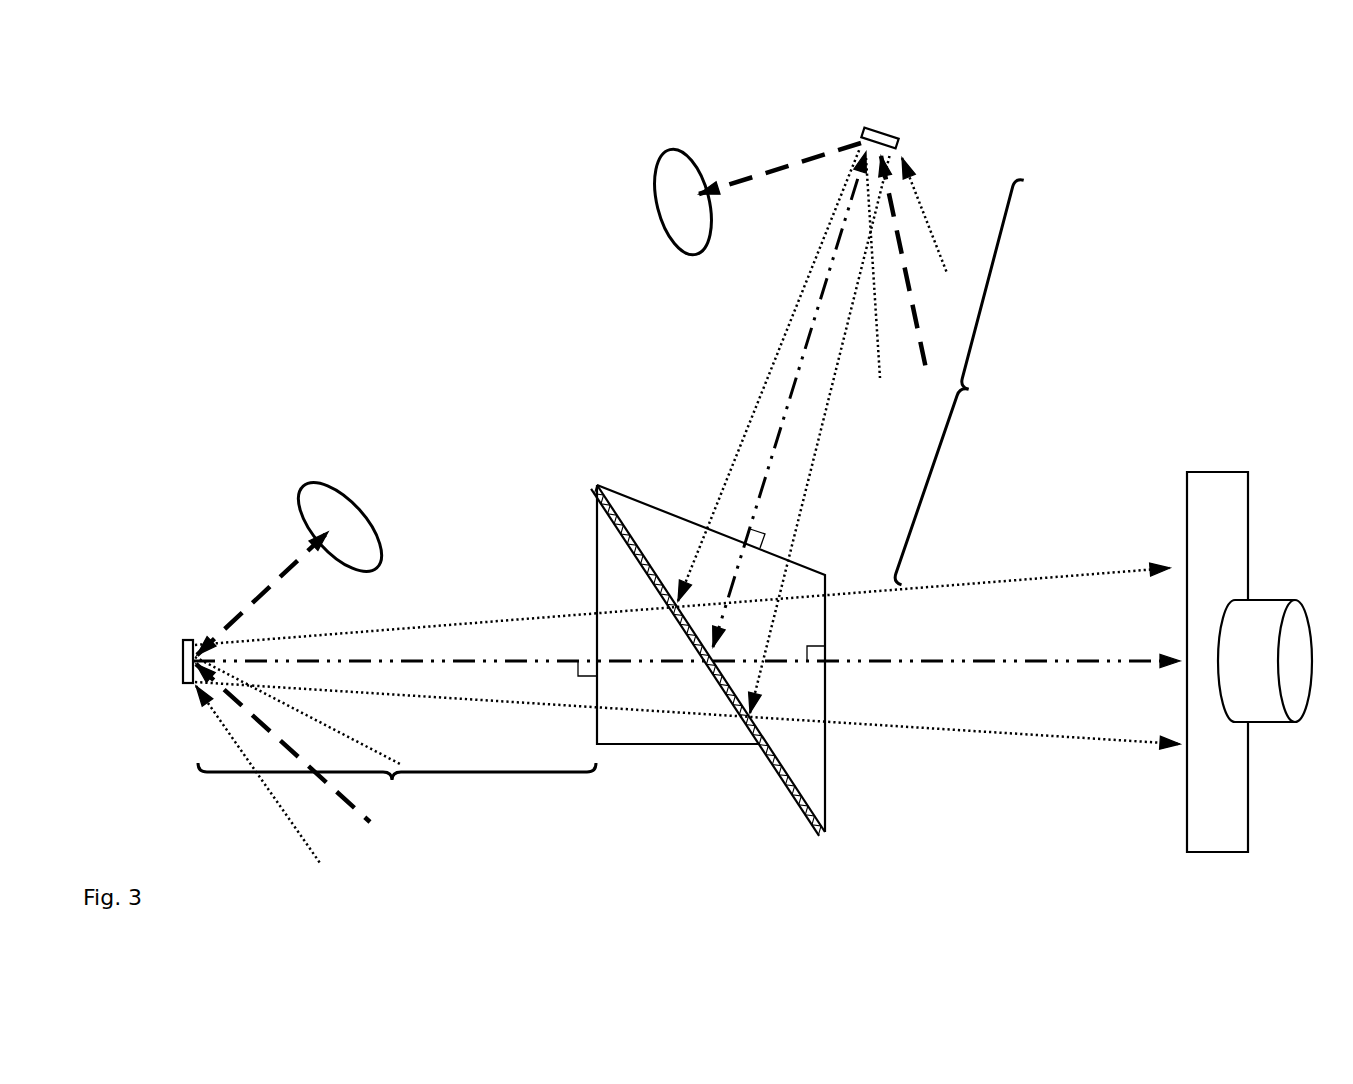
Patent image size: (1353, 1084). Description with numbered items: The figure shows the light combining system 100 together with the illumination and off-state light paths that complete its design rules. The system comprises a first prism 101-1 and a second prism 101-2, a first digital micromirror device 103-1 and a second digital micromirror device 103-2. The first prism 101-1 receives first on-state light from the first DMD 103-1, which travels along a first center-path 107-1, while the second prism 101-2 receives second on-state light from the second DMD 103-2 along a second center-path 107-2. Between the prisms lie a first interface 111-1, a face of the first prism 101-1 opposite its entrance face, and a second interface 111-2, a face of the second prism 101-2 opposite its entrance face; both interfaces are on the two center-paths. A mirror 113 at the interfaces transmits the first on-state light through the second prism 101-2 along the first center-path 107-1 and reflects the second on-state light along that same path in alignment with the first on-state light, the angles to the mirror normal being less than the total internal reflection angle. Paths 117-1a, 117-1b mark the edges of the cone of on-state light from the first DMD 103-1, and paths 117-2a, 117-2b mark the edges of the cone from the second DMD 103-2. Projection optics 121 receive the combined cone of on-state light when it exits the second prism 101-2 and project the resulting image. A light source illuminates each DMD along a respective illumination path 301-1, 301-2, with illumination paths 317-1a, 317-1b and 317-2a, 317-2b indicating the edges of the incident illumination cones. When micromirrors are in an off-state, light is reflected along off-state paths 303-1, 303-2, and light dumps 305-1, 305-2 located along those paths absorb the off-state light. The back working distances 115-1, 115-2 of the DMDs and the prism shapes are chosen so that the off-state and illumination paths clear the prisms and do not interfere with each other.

The light combining system 100 is at (238, 154).
The first prism 101-1 is at (610, 573).
The second prism 101-2 is at (812, 758).
The first digital micromirror device 103-1 is at (183, 648).
The second digital micromirror device 103-2 is at (900, 140).
The first center-path 107-1 is at (455, 665).
The second center-path 107-2 is at (782, 423).
The first interface 111-1 is at (608, 512).
The second interface 111-2 is at (597, 487).
The mirror 113 is at (773, 752).
The first back working distance 115-1 is at (397, 785).
The second back working distance 115-2 is at (963, 382).
The path 117-1a is at (563, 707).
The path 117-1b is at (515, 613).
The path 117-2a is at (818, 452).
The path 117-2b is at (783, 332).
The projection optics 121 is at (1236, 514).
The illumination path 301-1 is at (372, 822).
The illumination path 301-2 is at (922, 332).
The off-state path 303-1 is at (280, 570).
The off-state path 303-2 is at (808, 157).
The light dump 305-1 is at (335, 495).
The light dump 305-2 is at (660, 177).
The illumination path 317-1a is at (268, 788).
The illumination path 317-1b is at (332, 722).
The illumination path 317-2a is at (933, 235).
The illumination path 317-2b is at (882, 377).